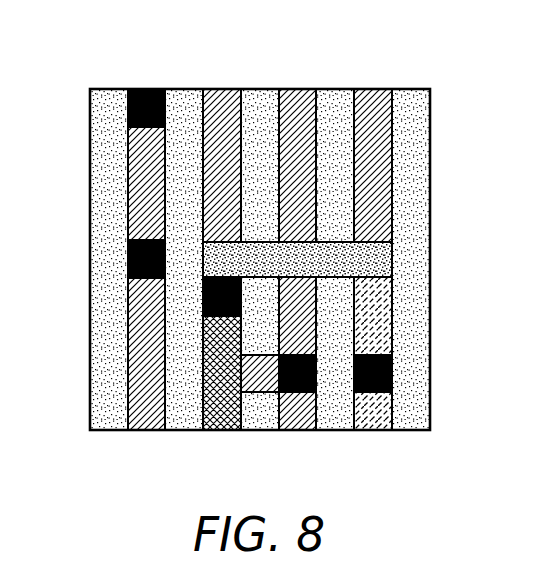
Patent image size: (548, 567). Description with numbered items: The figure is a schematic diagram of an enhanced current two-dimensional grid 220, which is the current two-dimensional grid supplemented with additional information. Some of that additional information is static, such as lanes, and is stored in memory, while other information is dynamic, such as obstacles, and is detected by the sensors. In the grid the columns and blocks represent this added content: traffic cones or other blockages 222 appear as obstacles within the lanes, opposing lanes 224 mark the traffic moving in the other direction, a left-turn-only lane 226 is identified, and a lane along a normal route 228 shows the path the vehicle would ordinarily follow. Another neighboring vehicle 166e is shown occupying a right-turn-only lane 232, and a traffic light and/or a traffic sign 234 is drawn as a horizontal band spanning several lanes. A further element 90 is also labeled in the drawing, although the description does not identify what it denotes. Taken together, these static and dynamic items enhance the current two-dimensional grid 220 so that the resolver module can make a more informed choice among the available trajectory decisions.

The enhanced current two-dimensional grid 220 is at (115, 77).
The traffic cones or other blockages 222 is at (142, 235).
The opposing lanes 224 is at (128, 186).
The left-turn-only lane 226 is at (222, 378).
The lane along a normal route 228 is at (262, 418).
The conductive feature 90 is at (260, 372).
The traffic light and/or traffic sign 234 is at (300, 260).
The neighboring vehicle 166e is at (393, 370).
The right-turn-only lane 232 is at (383, 410).